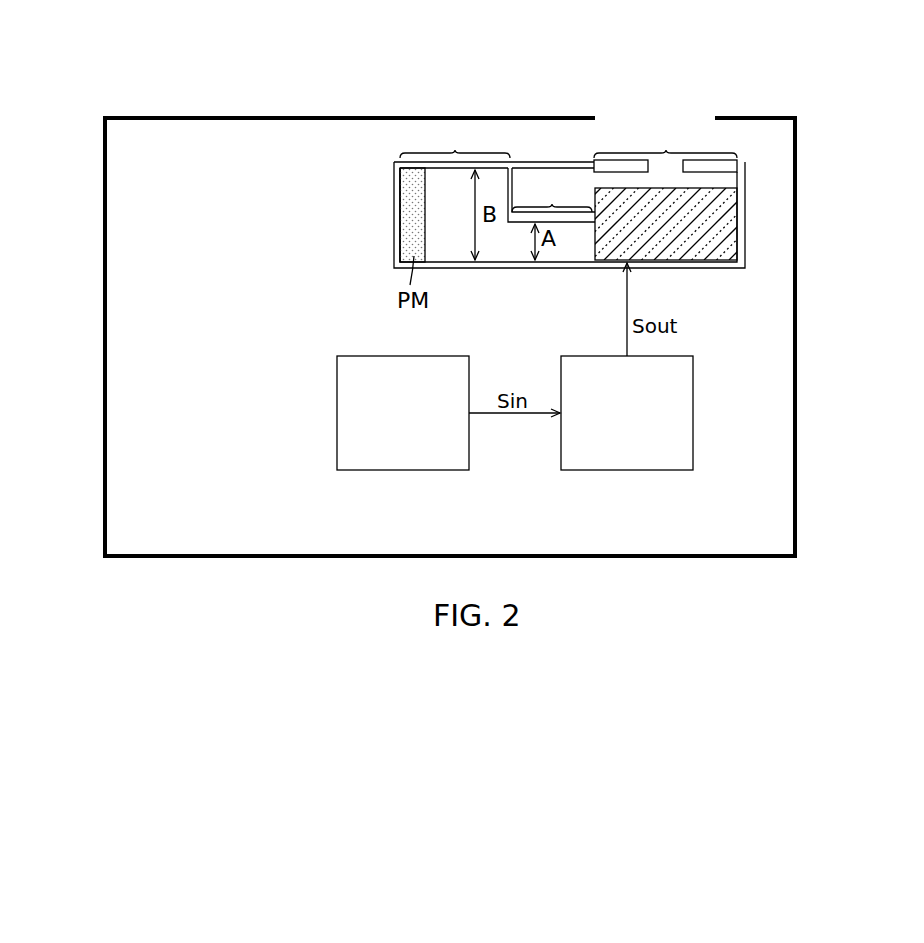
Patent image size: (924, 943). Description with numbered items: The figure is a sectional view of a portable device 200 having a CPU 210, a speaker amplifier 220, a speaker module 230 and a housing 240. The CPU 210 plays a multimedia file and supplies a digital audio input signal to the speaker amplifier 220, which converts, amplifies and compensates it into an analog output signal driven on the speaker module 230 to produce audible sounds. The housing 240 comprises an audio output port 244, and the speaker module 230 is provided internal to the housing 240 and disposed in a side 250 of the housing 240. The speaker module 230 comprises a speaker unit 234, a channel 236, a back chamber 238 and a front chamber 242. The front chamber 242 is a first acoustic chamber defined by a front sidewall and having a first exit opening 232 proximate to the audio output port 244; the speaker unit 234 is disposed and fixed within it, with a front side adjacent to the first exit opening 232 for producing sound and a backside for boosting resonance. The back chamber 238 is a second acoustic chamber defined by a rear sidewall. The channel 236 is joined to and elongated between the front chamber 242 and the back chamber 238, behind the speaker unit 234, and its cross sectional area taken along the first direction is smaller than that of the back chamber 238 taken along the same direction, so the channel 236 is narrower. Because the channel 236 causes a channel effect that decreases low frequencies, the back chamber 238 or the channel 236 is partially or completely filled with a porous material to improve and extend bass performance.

The portable device 200 is at (503, 300).
The CPU 210 is at (339, 356).
The speaker amplifier 220 is at (563, 356).
The speaker module 230 is at (633, 179).
The first exit opening 232 is at (667, 180).
The speaker unit 234 is at (708, 262).
The channel 236 is at (551, 195).
The back chamber 238 is at (455, 194).
The housing 240 is at (797, 335).
The front chamber 242 is at (665, 142).
The audio output port 244 is at (645, 110).
The side 250 is at (253, 100).